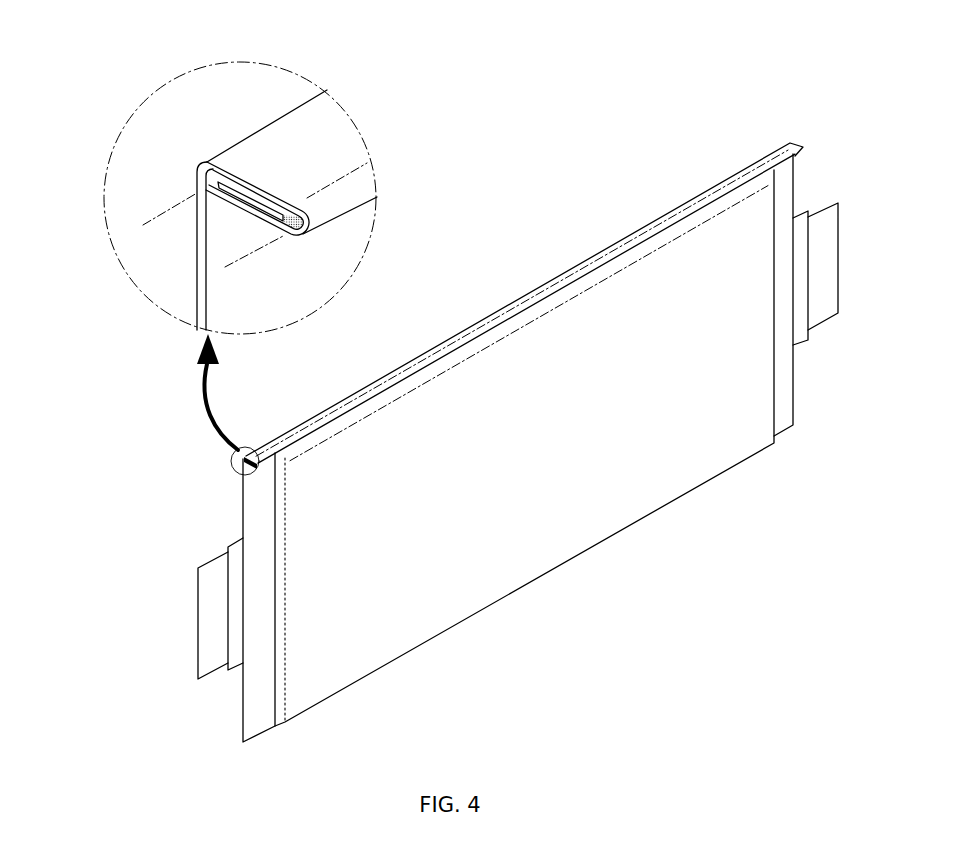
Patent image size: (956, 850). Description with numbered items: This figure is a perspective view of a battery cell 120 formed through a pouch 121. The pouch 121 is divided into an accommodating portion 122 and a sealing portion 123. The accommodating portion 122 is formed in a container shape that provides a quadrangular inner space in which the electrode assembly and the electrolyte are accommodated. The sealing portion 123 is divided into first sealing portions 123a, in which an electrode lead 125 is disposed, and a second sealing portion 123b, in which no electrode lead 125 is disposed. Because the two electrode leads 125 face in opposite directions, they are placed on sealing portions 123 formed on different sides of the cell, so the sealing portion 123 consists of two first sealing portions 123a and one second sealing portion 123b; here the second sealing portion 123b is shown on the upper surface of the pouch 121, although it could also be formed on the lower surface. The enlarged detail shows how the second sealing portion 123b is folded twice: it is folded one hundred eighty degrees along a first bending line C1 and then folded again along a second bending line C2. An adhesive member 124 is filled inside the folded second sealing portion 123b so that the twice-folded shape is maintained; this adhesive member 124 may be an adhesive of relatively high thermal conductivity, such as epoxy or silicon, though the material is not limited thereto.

The battery cell 120 is at (499, 110).
The pouch 121 is at (537, 560).
The accommodating portion 122 is at (563, 358).
The sealing portion 123 is at (782, 75).
The first sealing portion 123a is at (218, 227).
The second sealing portion 123b is at (280, 143).
The adhesive member 124 is at (288, 230).
The electrode lead 125 is at (823, 302).
The first bending line C1 is at (170, 210).
The second bending line C2 is at (252, 252).